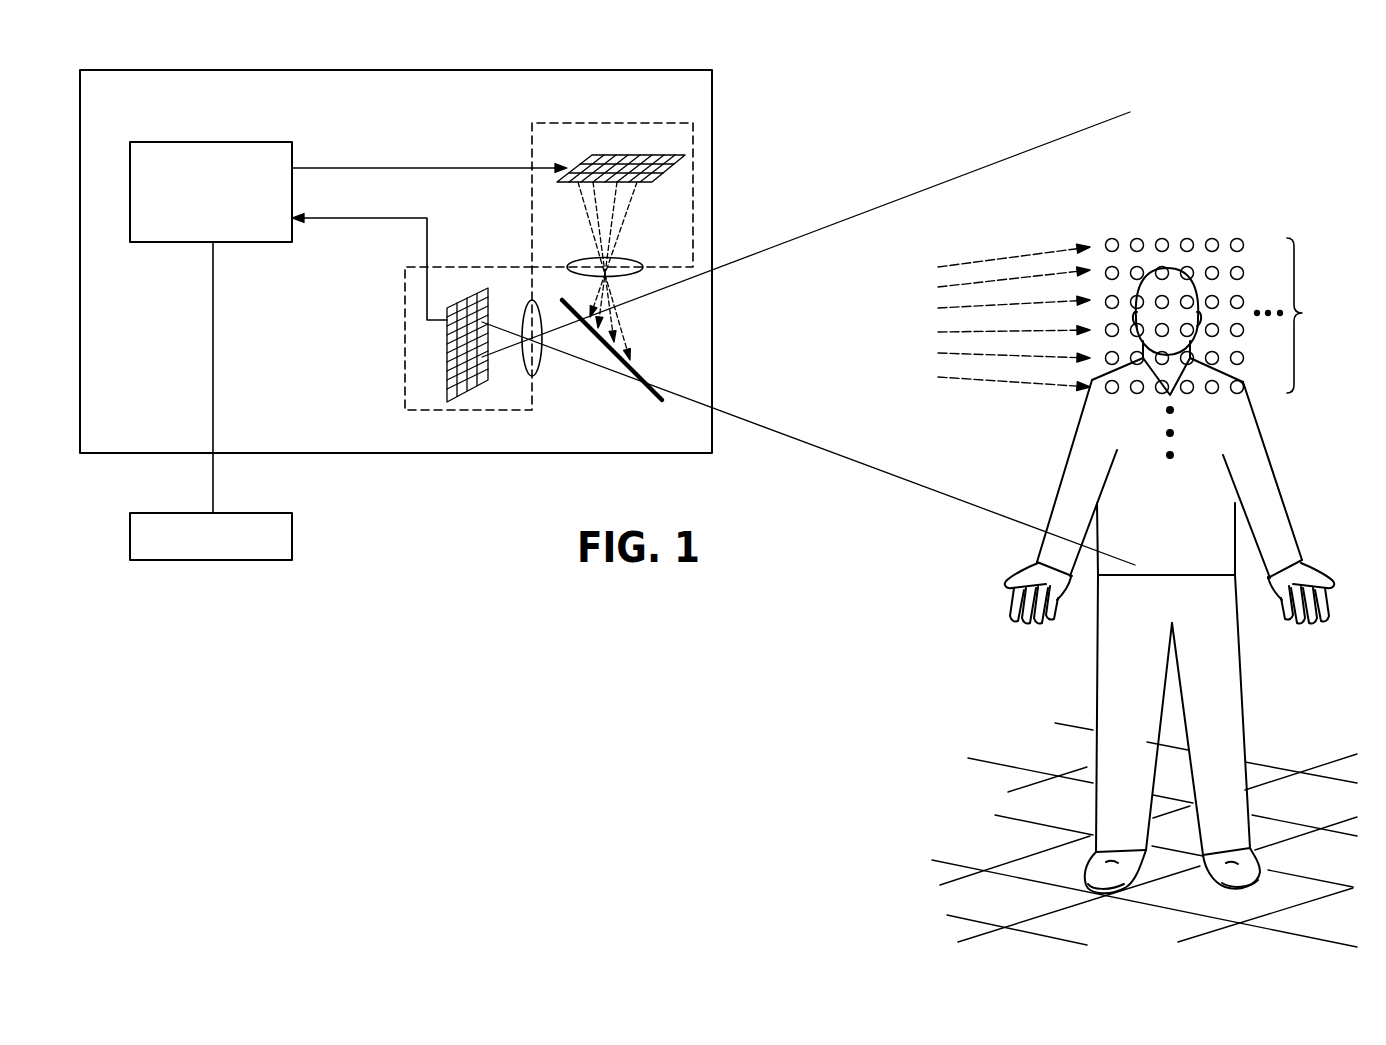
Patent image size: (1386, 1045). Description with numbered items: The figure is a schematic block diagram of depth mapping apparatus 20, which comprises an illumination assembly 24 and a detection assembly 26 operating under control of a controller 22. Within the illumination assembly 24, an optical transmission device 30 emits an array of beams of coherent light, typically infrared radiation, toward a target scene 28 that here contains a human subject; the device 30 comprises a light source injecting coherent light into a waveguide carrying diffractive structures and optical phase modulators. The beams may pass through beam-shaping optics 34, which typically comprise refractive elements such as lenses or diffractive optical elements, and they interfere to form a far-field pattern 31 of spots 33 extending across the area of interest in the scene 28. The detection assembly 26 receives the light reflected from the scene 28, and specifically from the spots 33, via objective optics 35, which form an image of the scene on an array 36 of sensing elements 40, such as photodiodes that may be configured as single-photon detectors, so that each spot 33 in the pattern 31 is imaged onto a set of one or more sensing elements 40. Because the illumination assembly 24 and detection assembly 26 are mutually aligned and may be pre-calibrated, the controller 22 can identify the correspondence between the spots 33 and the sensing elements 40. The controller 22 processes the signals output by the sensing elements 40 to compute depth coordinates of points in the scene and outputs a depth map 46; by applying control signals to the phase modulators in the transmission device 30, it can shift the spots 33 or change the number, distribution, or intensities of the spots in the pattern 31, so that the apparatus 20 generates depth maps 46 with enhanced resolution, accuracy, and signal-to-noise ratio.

The depth mapping apparatus 20 is at (376, 70).
The controller 22 is at (212, 142).
The illumination assembly 24 is at (592, 123).
The detection assembly 26 is at (405, 372).
The target scene 28 is at (1188, 286).
The optical transmission device 30 is at (686, 168).
The far-field pattern 31 is at (1291, 315).
The spots 33 is at (1244, 330).
The beam-shaping optics 34 is at (640, 262).
The objective optics 35 is at (542, 367).
The array 36 is at (488, 292).
The sensing elements 40 is at (482, 357).
The depth map 46 is at (130, 532).